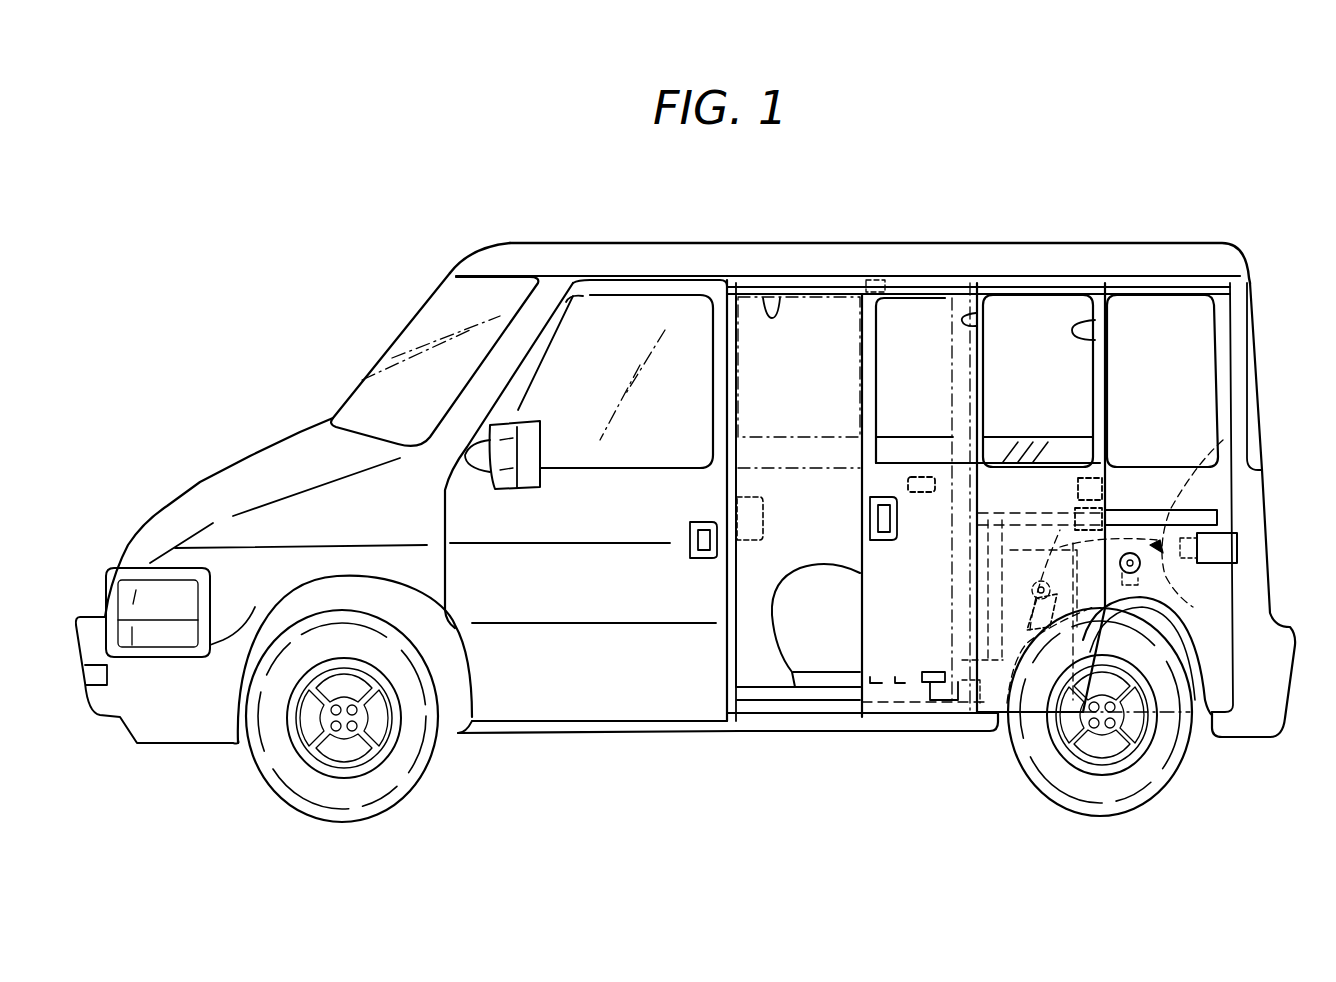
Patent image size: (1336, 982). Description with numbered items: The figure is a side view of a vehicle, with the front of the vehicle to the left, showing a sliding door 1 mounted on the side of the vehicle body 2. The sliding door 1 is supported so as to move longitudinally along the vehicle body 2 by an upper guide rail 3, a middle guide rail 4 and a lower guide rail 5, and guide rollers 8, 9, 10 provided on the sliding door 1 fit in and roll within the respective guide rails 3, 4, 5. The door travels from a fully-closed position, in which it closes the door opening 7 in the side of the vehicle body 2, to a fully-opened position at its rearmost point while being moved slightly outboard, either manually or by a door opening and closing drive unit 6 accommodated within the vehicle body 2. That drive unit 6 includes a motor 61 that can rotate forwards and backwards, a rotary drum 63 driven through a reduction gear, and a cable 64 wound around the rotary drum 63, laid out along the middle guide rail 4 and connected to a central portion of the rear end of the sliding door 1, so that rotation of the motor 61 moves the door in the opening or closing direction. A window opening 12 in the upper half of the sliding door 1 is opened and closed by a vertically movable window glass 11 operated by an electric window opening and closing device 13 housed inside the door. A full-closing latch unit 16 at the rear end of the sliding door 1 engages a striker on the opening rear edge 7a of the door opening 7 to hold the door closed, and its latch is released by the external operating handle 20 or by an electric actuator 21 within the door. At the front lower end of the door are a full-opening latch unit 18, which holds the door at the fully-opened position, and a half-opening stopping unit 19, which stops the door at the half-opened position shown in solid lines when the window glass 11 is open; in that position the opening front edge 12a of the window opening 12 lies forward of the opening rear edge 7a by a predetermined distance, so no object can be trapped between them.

The sliding door 1 is at (1033, 276).
The vehicle body 2 is at (988, 243).
The upper guide rail 3 is at (803, 286).
The middle guide rail 4 is at (1207, 508).
The lower guide rail 5 is at (762, 714).
The door opening and closing drive unit 6 is at (1183, 580).
The door opening 7 is at (768, 293).
The opening rear edge 7a is at (976, 319).
The guide roller 8 is at (874, 278).
The guide roller 9 is at (1100, 510).
The guide roller 10 is at (912, 685).
The window glass 11 is at (1063, 437).
The window opening 12 is at (1095, 325).
The opening front edge 12a is at (883, 325).
The electric window opening and closing device 13 is at (942, 702).
The full-closing latch unit 16 is at (1105, 488).
The full-opening latch unit 18 is at (898, 679).
The half-opening stopping unit 19 is at (874, 680).
The external operating handle 20 is at (893, 540).
The electric actuator 21 is at (914, 475).
The motor 61 is at (1067, 615).
The rotary drum 63 is at (1145, 576).
The cable 64 is at (1223, 440).